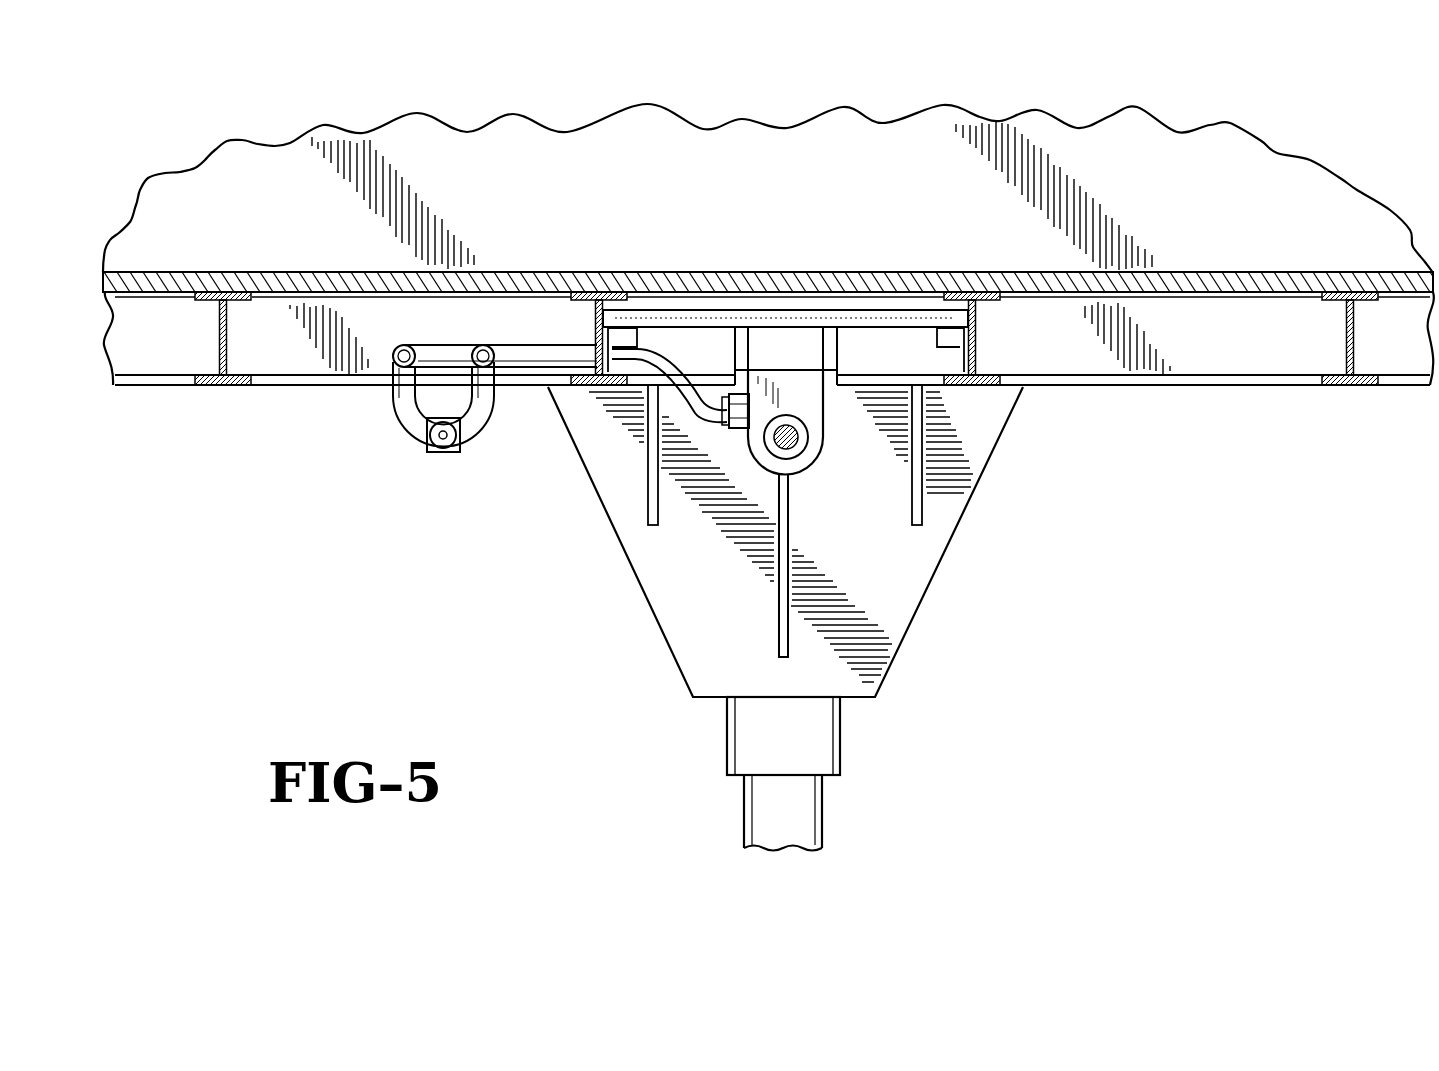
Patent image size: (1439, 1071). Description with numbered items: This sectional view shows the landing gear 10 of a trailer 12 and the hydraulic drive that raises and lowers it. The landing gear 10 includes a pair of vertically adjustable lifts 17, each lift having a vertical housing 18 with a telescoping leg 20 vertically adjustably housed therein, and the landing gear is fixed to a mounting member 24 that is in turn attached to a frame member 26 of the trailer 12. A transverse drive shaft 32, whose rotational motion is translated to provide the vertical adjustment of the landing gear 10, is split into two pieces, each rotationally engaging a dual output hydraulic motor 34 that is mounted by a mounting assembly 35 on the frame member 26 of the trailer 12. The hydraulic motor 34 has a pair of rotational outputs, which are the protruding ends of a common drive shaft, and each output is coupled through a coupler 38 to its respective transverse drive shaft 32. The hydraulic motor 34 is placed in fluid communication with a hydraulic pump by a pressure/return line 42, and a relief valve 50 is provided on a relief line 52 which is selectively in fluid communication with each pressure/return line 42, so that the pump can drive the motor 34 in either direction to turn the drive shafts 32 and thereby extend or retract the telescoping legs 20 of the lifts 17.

The landing gear 10 is at (590, 607).
The trailer 12 is at (1318, 173).
The vertically adjustable lift 17 is at (801, 774).
The vertical housing 18 is at (745, 738).
The telescoping leg 20 is at (762, 816).
The mounting member 24 is at (882, 590).
The frame member 26 is at (219, 338).
The transverse drive shaft 32 is at (795, 440).
The dual output hydraulic motor 34 is at (757, 467).
The mounting assembly 35 is at (800, 312).
The coupler 38 is at (800, 435).
The pressure/return line 42 is at (551, 347).
The relief valve 50 is at (442, 452).
The relief line 52 is at (393, 423).